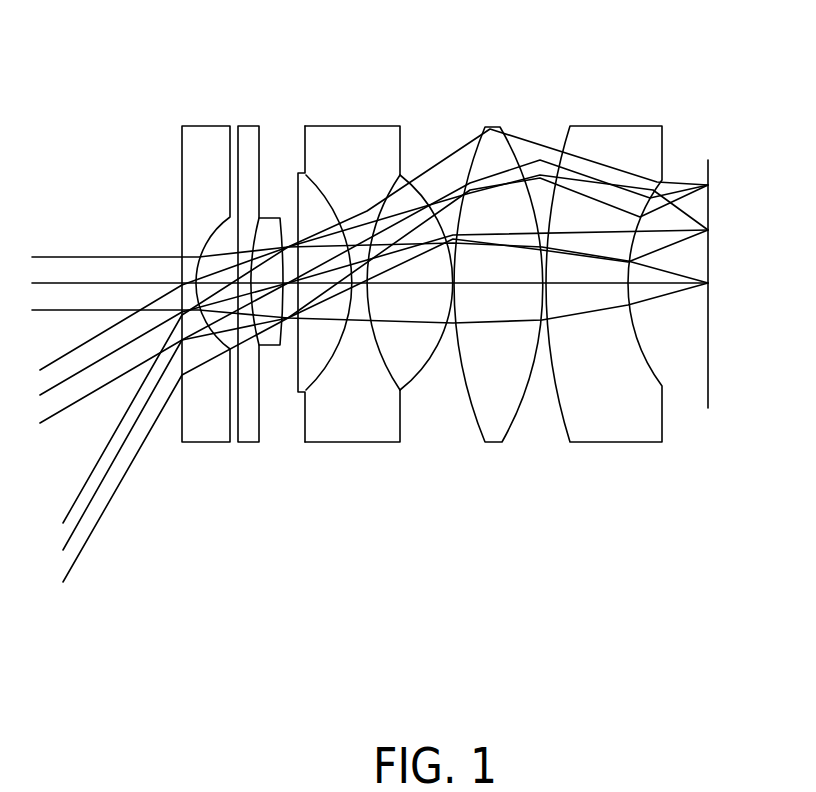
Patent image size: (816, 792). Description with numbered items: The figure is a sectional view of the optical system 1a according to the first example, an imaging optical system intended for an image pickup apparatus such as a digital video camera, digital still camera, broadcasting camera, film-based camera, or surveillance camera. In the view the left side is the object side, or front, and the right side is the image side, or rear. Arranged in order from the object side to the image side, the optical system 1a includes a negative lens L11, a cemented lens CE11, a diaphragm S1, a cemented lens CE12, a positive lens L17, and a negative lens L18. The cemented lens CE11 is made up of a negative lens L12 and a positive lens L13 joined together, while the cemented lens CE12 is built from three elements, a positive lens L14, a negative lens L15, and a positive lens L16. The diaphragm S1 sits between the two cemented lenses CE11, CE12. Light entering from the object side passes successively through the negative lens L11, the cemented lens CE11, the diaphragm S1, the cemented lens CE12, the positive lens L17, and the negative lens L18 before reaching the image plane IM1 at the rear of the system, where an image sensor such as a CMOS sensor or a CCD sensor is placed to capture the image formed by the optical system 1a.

The optical system 1a is at (747, 49).
The negative lens L11 is at (182, 168).
The negative lens L12 is at (247, 126).
The positive lens L13 is at (275, 222).
The positive lens L14 is at (307, 205).
The negative lens L15 is at (362, 407).
The positive lens L16 is at (414, 357).
The positive lens L17 is at (493, 127).
The negative lens L18 is at (610, 150).
The diaphragm S1 is at (286, 330).
The cemented lens CE11 is at (267, 330).
The cemented lens CE12 is at (391, 339).
The image plane IM1 is at (709, 347).